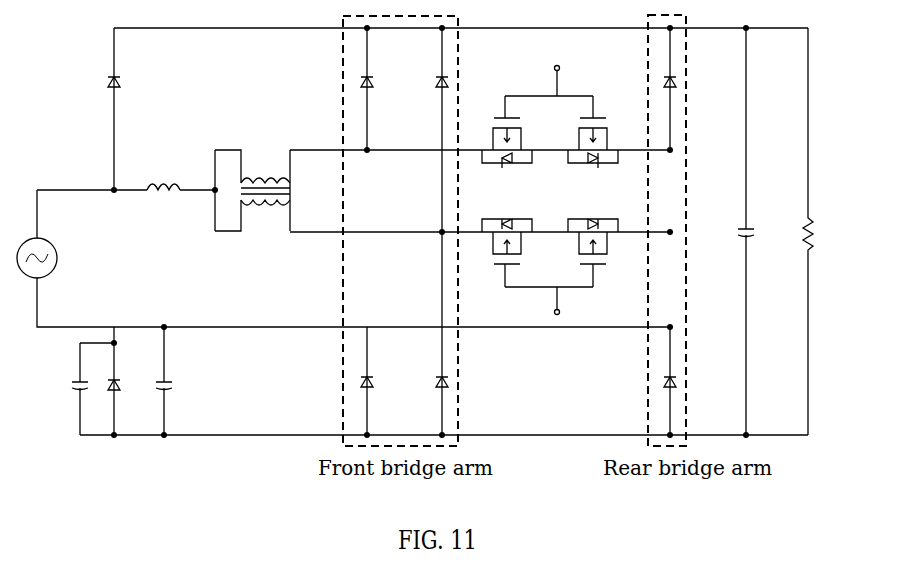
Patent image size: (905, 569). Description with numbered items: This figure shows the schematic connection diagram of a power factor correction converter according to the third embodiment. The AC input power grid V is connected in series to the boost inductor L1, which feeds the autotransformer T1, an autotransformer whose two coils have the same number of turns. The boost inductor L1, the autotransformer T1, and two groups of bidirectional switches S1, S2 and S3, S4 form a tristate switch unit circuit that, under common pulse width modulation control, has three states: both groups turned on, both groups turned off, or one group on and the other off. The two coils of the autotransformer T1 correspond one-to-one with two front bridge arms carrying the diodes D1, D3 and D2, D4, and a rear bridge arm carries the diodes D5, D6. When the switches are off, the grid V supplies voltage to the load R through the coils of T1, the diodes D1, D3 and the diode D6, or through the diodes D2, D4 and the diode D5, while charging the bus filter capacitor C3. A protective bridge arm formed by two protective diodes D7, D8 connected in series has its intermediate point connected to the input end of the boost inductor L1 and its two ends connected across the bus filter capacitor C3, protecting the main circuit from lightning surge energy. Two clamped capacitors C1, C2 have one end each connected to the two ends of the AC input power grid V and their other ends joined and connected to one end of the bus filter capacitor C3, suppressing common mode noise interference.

The protective diode D7 is at (97, 109).
The boost inductor L1 is at (163, 170).
The autotransformer T1 is at (252, 211).
The AC input power grid V is at (51, 258).
The clamped capacitor C1 is at (60, 389).
The protective diode D8 is at (127, 381).
The clamped capacitor C2 is at (182, 381).
The diode D1 is at (339, 89).
The diode D2 is at (345, 381).
The diode D3 is at (422, 130).
The diode D4 is at (422, 333).
The bidirectional switch S1 is at (496, 157).
The bidirectional switch S2 is at (603, 157).
The bidirectional switch S3 is at (500, 256).
The bidirectional switch S4 is at (604, 256).
The diode D5 is at (688, 89).
The diode D6 is at (688, 381).
The bus filter capacitor C3 is at (727, 231).
The load R is at (823, 231).